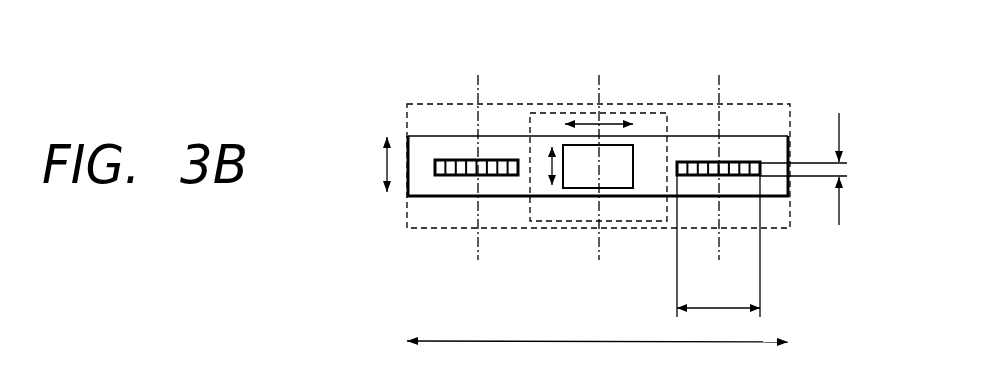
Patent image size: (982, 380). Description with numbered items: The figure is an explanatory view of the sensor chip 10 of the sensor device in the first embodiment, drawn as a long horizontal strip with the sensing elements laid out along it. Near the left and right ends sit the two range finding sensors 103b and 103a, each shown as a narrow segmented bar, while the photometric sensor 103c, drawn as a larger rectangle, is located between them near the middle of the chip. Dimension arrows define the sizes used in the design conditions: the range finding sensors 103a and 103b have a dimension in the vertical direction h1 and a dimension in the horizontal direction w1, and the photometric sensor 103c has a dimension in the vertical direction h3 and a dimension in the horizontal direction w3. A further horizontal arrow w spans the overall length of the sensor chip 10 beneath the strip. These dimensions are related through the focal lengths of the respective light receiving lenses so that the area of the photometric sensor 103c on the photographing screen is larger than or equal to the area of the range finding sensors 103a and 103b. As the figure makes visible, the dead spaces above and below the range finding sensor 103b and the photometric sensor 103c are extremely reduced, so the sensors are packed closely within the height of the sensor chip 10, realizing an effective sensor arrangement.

The sensor chip 10 is at (773, 197).
The range finding sensor 103a is at (745, 162).
The range finding sensor 103b is at (455, 160).
The photometric sensor 103c is at (567, 145).
The vertical dimension of the range finding sensors h1 is at (615, 169).
The vertical dimension of the photometric sensor h3 is at (549, 166).
The horizontal dimension of the range finding sensors w1 is at (718, 246).
The horizontal dimension of the photometric sensor w3 is at (605, 123).
The chip width dimension w is at (597, 331).